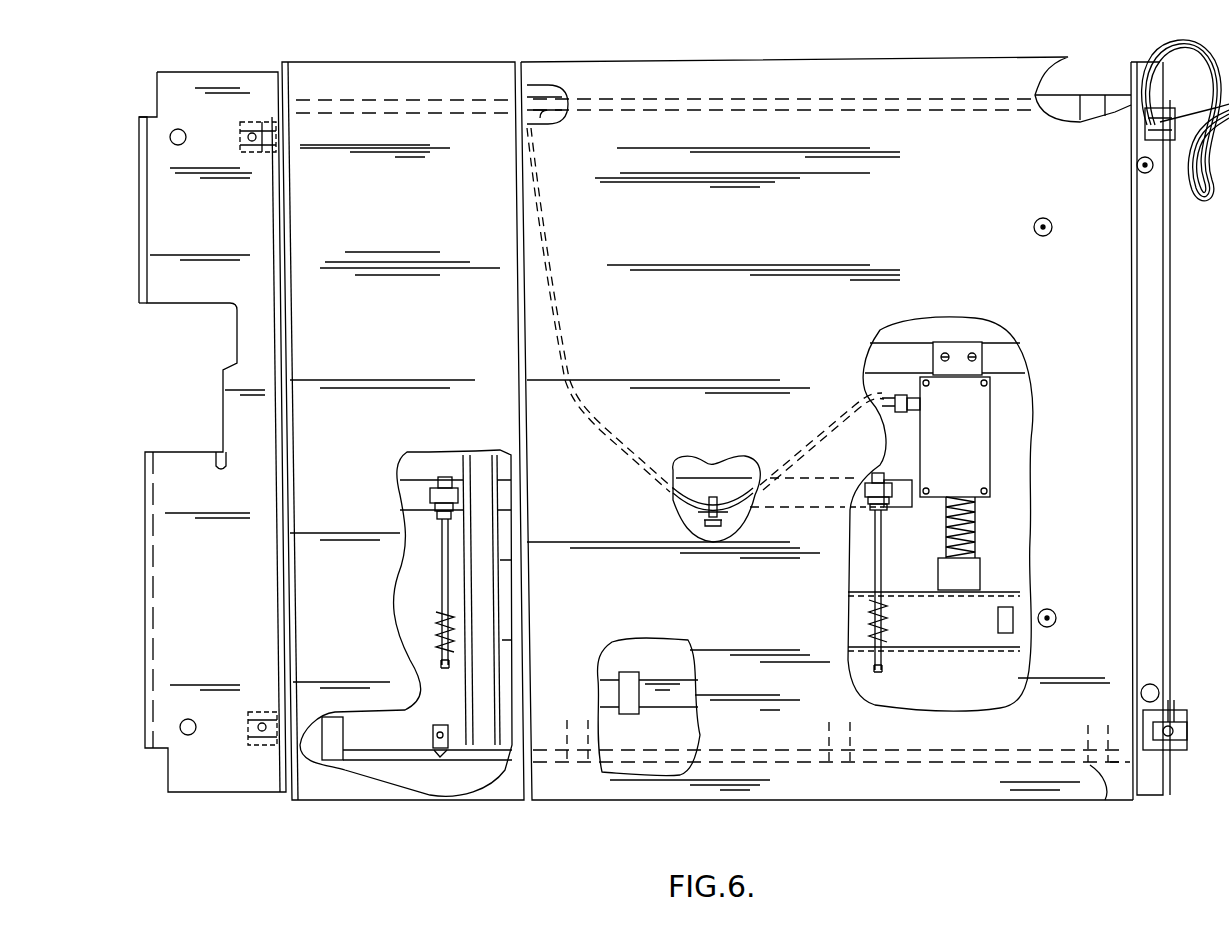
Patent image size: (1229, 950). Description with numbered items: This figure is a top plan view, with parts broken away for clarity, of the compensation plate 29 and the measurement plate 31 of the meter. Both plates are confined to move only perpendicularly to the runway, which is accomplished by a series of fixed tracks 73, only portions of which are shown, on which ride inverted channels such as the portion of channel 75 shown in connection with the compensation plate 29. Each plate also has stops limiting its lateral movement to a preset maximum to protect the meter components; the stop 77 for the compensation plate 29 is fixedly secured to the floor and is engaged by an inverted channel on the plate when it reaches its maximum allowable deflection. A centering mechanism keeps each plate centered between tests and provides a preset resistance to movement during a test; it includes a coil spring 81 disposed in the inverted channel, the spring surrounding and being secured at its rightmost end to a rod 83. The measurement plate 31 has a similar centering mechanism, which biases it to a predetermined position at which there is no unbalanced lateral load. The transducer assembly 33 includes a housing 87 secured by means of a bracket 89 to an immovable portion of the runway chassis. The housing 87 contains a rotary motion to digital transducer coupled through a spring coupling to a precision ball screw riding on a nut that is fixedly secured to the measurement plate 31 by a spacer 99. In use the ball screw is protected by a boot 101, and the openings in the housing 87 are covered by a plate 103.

The compensation plate 29 is at (410, 331).
The measurement plate 31 is at (754, 339).
The transducer assembly 33 is at (1036, 453).
The fixed tracks 73 is at (338, 762).
The channel 75 is at (503, 456).
The stop 77 is at (630, 674).
The coil spring 81 is at (440, 626).
The rod 83 is at (446, 563).
The housing 87 is at (991, 432).
The bracket 89 is at (960, 342).
The spacer 99 is at (980, 590).
The boot 101 is at (976, 530).
The plate 103 is at (972, 448).